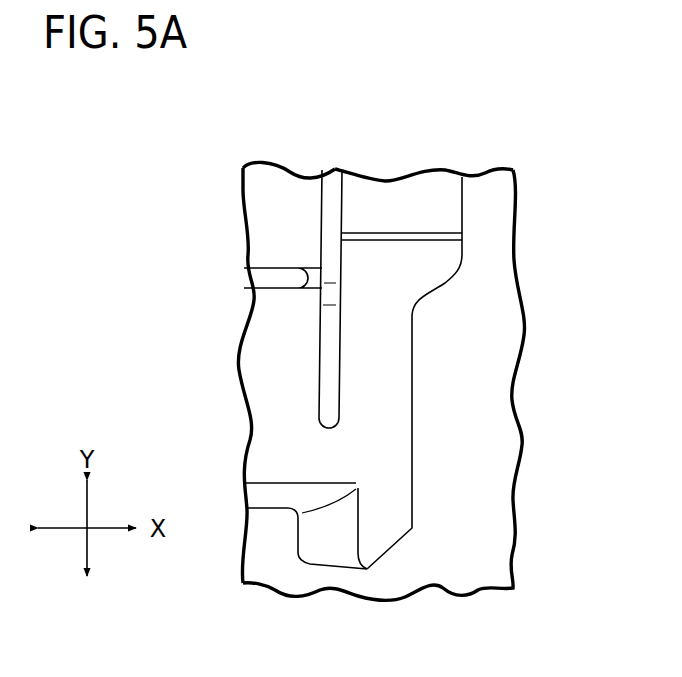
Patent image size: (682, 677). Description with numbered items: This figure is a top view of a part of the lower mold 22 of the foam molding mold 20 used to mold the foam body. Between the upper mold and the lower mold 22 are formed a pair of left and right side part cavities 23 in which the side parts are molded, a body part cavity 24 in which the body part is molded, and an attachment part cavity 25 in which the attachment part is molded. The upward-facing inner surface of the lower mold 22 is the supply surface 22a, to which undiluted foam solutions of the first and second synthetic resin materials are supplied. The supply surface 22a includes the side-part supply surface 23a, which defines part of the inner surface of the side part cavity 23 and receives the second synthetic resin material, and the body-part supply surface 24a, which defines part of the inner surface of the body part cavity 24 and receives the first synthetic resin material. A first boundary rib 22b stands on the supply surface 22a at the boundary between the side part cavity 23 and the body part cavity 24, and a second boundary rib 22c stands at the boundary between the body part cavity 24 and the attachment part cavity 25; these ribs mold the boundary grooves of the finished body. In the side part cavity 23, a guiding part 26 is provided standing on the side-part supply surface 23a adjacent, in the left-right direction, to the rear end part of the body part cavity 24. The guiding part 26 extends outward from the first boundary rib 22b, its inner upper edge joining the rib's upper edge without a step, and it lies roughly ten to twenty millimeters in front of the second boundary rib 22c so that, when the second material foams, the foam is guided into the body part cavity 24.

The foam molding mold 20 is at (513, 170).
The lower mold 22 is at (426, 336).
The supply surface 22a is at (414, 355).
The first boundary rib 22b is at (318, 358).
The second boundary rib 22c is at (278, 289).
The side part cavity 23 is at (422, 203).
The side-part supply surface 23a is at (450, 212).
The body part cavity 24 is at (288, 206).
The body-part supply surface 24a is at (258, 231).
The attachment part cavity 25 is at (414, 437).
The guiding part 26 is at (418, 238).